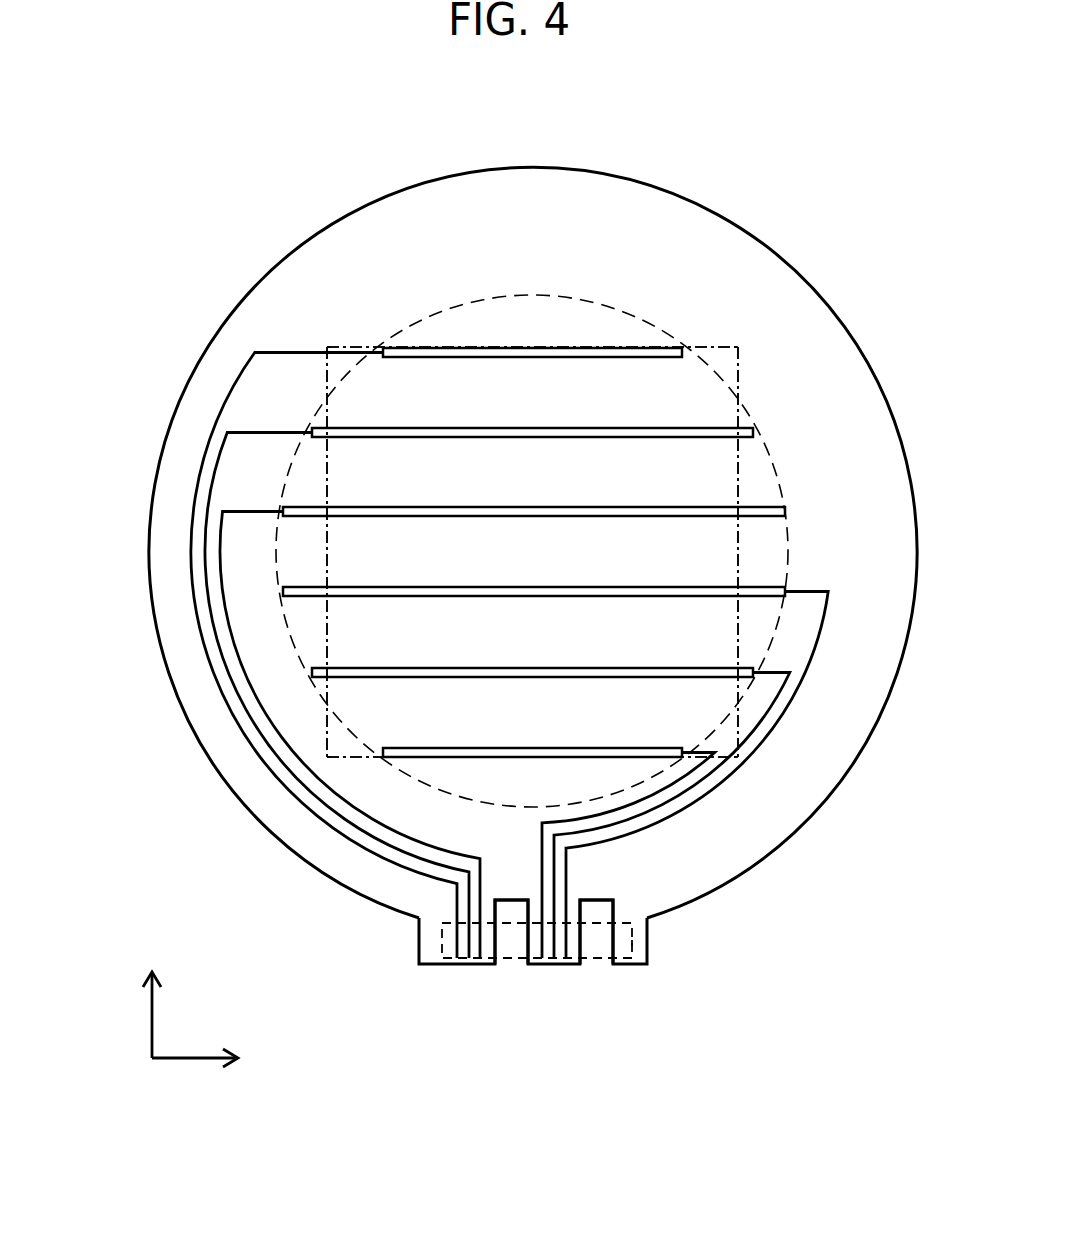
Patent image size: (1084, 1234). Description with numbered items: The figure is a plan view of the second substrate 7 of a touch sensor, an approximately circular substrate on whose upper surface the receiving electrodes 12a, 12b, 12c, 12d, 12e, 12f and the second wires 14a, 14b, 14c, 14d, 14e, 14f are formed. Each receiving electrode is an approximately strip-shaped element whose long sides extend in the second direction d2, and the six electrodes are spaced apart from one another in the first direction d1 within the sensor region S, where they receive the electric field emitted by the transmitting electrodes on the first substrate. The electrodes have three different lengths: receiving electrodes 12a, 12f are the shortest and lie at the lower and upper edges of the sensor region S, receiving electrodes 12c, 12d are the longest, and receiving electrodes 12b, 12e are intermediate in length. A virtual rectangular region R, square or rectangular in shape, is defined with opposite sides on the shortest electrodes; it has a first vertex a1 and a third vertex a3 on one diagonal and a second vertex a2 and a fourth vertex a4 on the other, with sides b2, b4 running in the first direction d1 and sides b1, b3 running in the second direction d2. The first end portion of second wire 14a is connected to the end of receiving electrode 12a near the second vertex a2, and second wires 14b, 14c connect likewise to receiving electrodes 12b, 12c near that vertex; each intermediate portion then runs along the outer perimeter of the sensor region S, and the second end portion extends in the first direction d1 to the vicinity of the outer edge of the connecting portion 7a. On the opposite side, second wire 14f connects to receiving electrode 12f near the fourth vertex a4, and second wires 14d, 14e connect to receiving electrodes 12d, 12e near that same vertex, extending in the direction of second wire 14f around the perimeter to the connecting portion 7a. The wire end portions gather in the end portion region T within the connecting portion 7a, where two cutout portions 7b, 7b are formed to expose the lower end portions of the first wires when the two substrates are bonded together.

The second substrate 7 is at (865, 747).
The connecting portion 7a is at (648, 952).
The cutout portion 7b is at (496, 935).
The receiving electrode 12a is at (496, 747).
The receiving electrode 12b is at (496, 667).
The receiving electrode 12c is at (496, 587).
The receiving electrode 12d is at (496, 507).
The receiving electrode 12e is at (496, 427).
The receiving electrode 12f is at (496, 347).
The second wire 14a is at (704, 763).
The second wire 14b is at (672, 800).
The second wire 14c is at (643, 829).
The second wire 14d is at (242, 515).
The second wire 14e is at (242, 435).
The second wire 14f is at (268, 355).
The sensor region S is at (553, 295).
The rectangular region R is at (340, 348).
The end portion region T is at (633, 942).
The first vertex a1 is at (327, 757).
The second vertex a2 is at (738, 757).
The third vertex a3 is at (738, 347).
The fourth vertex a4 is at (327, 347).
The side b1 is at (347, 758).
The side b2 is at (740, 365).
The side b3 is at (363, 346).
The side b4 is at (327, 720).
The first direction d1 is at (150, 1026).
The second direction d2 is at (188, 1060).